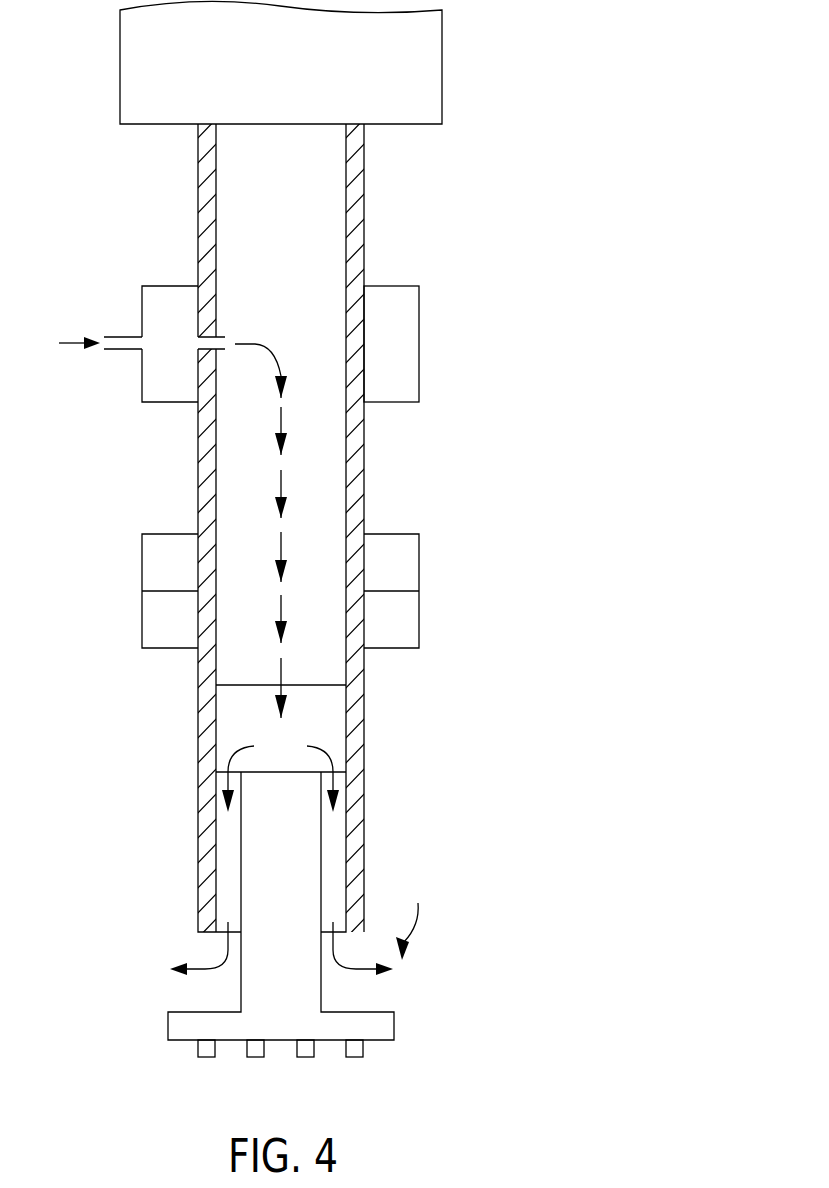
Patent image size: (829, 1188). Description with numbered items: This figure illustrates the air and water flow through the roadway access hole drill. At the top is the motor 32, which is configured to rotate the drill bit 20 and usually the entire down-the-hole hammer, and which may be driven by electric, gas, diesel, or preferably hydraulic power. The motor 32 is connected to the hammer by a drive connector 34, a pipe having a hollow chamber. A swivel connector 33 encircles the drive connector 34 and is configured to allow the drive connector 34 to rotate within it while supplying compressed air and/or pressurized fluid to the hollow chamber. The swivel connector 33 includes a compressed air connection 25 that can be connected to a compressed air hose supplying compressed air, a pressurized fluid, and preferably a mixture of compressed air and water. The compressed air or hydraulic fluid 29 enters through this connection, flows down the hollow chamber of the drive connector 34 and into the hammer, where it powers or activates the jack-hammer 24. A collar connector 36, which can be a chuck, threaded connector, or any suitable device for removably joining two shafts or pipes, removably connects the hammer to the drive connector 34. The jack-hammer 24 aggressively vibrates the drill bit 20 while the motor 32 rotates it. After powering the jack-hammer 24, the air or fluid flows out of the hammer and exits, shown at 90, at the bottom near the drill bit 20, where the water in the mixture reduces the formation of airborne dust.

The motor 32 is at (442, 68).
The drive connector 34 is at (364, 205).
The swivel connector 33 is at (419, 343).
The compressed air connection 25 is at (120, 333).
The compressed air or hydraulic fluid 29 is at (255, 344).
The collar connector 36 is at (419, 560).
The jack-hammer 24 is at (325, 727).
The drill bit 20 is at (394, 1012).
The exiting flow 90 is at (414, 915).